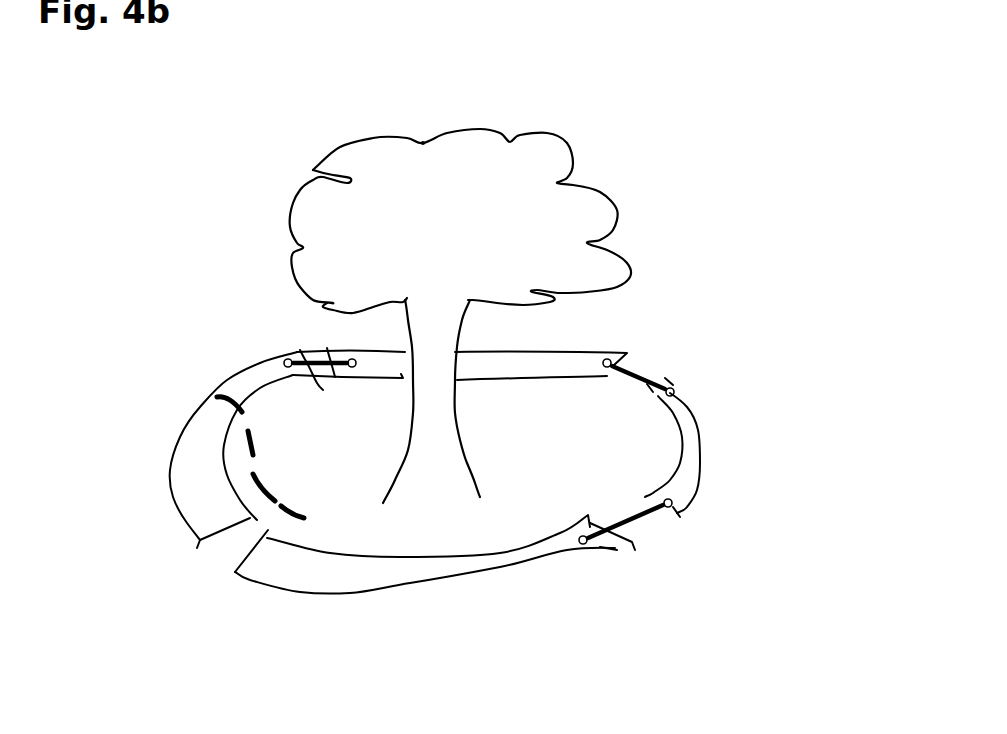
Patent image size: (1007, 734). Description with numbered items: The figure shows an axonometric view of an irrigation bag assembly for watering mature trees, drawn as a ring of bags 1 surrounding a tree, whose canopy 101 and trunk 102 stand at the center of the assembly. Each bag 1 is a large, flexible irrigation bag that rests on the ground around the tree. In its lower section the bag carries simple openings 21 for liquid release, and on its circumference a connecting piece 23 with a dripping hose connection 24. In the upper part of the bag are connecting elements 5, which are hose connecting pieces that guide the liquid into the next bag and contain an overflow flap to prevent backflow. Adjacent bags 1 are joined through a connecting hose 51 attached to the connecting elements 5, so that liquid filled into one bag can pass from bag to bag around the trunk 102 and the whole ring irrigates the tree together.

The bag 1 is at (415, 580).
The connecting element 5 is at (590, 543).
The simple openings 21 is at (791, 226).
The connecting piece 23 is at (215, 400).
The dripping hose connection 24 is at (250, 452).
The connecting hose 51 is at (632, 512).
The tree canopy 101 is at (550, 248).
The tree trunk 102 is at (428, 457).